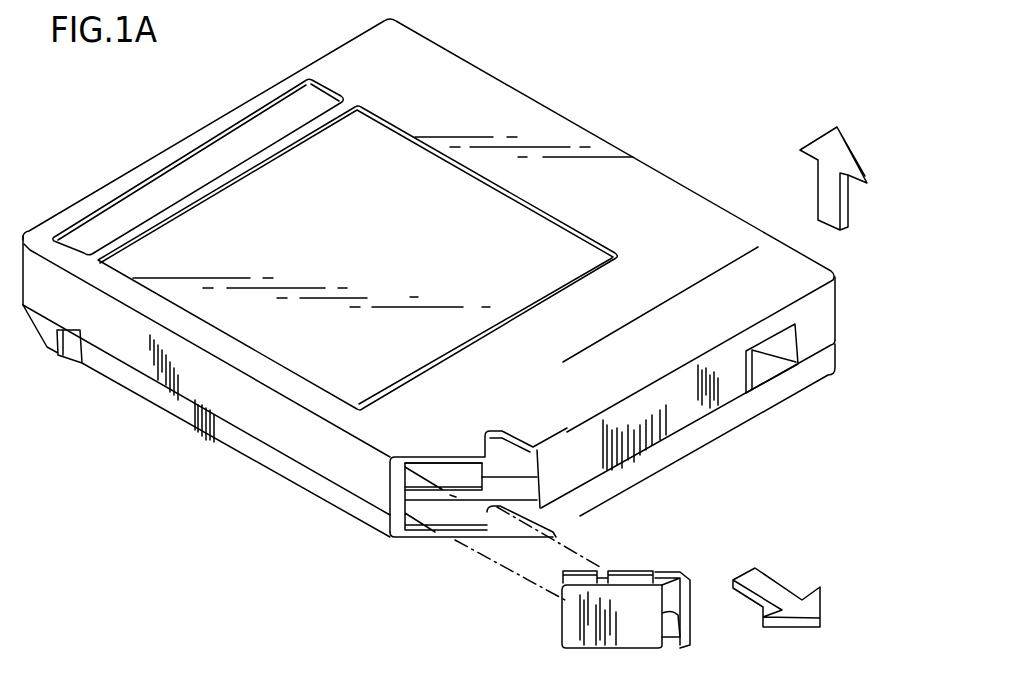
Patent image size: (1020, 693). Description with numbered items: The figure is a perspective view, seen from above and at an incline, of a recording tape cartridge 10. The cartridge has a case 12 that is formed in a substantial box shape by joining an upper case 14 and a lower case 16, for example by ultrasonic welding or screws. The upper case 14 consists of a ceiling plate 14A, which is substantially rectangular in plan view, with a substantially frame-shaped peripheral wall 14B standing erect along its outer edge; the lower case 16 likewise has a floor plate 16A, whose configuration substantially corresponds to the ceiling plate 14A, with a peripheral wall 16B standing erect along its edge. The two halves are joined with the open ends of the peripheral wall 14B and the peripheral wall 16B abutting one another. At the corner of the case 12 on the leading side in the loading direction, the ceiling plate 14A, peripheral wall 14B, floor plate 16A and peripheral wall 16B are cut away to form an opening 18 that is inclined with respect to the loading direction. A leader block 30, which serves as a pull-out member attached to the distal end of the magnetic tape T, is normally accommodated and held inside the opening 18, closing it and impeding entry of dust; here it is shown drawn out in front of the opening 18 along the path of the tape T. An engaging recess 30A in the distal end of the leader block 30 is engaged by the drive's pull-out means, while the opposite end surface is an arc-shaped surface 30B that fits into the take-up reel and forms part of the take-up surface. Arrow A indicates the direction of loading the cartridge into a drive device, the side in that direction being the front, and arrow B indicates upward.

The recording tape cartridge 10 is at (640, 113).
The case 12 is at (786, 430).
The upper case 14 is at (686, 403).
The ceiling plate 14A is at (715, 228).
The peripheral wall 14B is at (270, 420).
The lower case 16 is at (686, 447).
The floor plate 16A is at (417, 530).
The peripheral wall 16B is at (303, 480).
The opening 18 is at (462, 470).
The leader block 30 is at (611, 655).
The engaging recess 30A is at (670, 630).
The arc-shaped surface 30B is at (563, 566).
The magnetic tape T is at (533, 563).
The arrow A is at (768, 585).
The arrow B is at (830, 200).